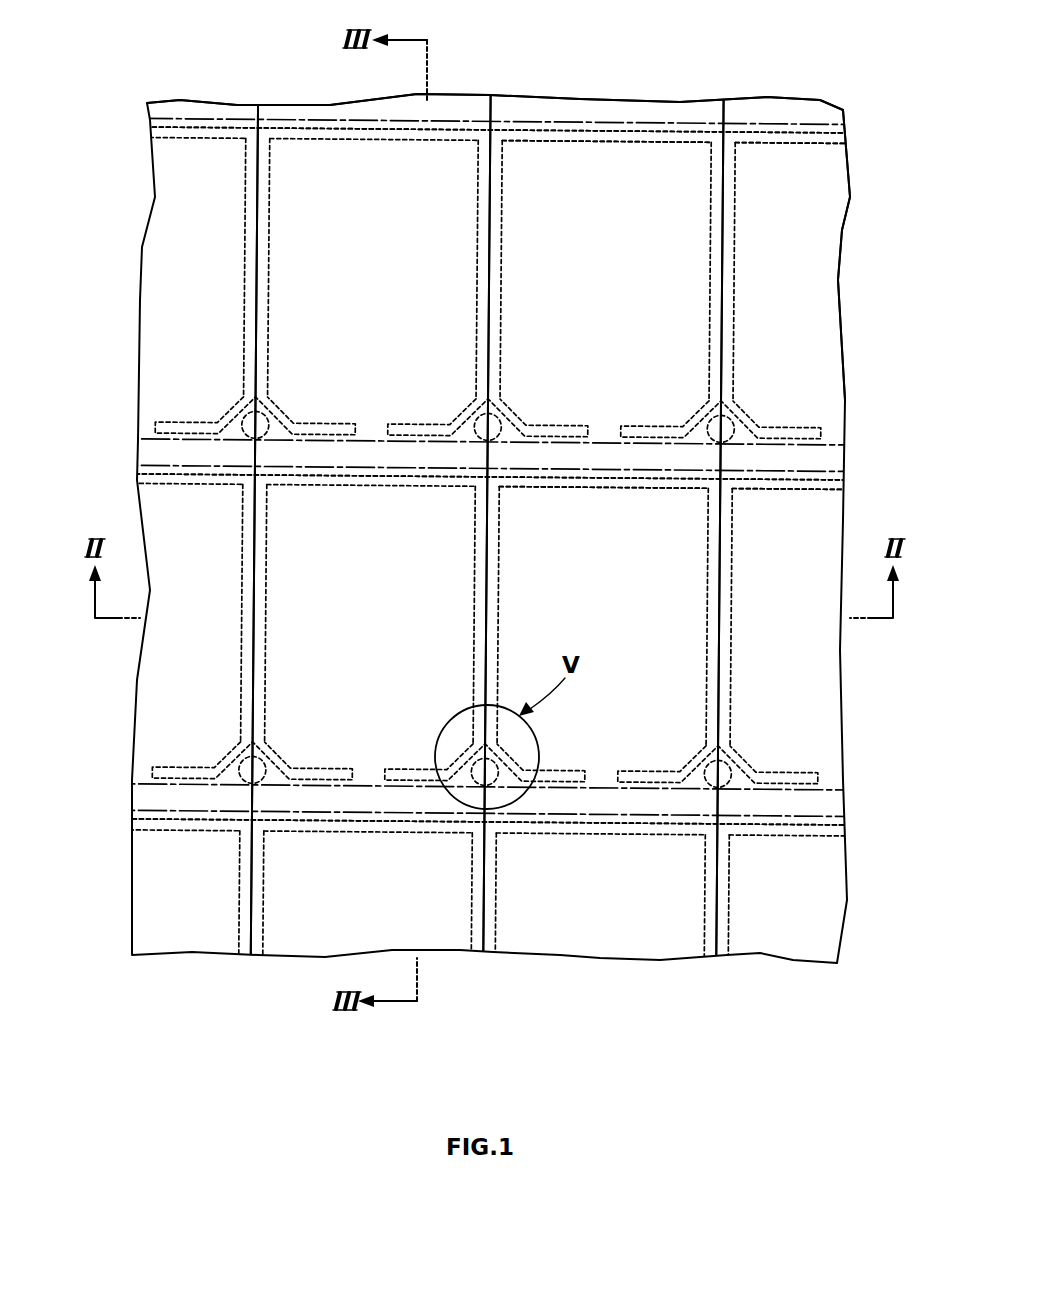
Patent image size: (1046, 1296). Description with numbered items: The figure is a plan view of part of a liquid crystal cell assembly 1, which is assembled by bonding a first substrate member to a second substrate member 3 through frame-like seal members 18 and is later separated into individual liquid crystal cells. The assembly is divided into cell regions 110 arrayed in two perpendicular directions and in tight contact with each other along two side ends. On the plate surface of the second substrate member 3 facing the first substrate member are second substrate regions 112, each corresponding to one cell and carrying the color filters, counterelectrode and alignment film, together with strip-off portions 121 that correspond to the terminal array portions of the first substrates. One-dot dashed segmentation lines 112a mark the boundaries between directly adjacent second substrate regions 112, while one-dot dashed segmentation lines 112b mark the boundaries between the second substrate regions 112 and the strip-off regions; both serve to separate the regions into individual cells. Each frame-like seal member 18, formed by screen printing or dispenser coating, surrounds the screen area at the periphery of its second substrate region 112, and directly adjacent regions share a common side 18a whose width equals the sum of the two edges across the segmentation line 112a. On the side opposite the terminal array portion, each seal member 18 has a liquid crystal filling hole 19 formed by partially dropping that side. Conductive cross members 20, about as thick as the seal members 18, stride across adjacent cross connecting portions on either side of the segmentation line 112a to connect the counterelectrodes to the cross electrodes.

The liquid crystal cell assembly 1 is at (826, 82).
The second substrate member 3 is at (186, 85).
The frame-like seal member 18 is at (283, 132).
The common side 18a is at (240, 268).
The liquid crystal filling hole 19 is at (378, 433).
The conductive cross member 20 is at (258, 410).
The cell region 110 is at (686, 349).
The second substrate region 112 is at (526, 162).
The segmentation line 112a is at (260, 195).
The segmentation line 112b is at (577, 128).
The strip-off portion 121 is at (633, 120).